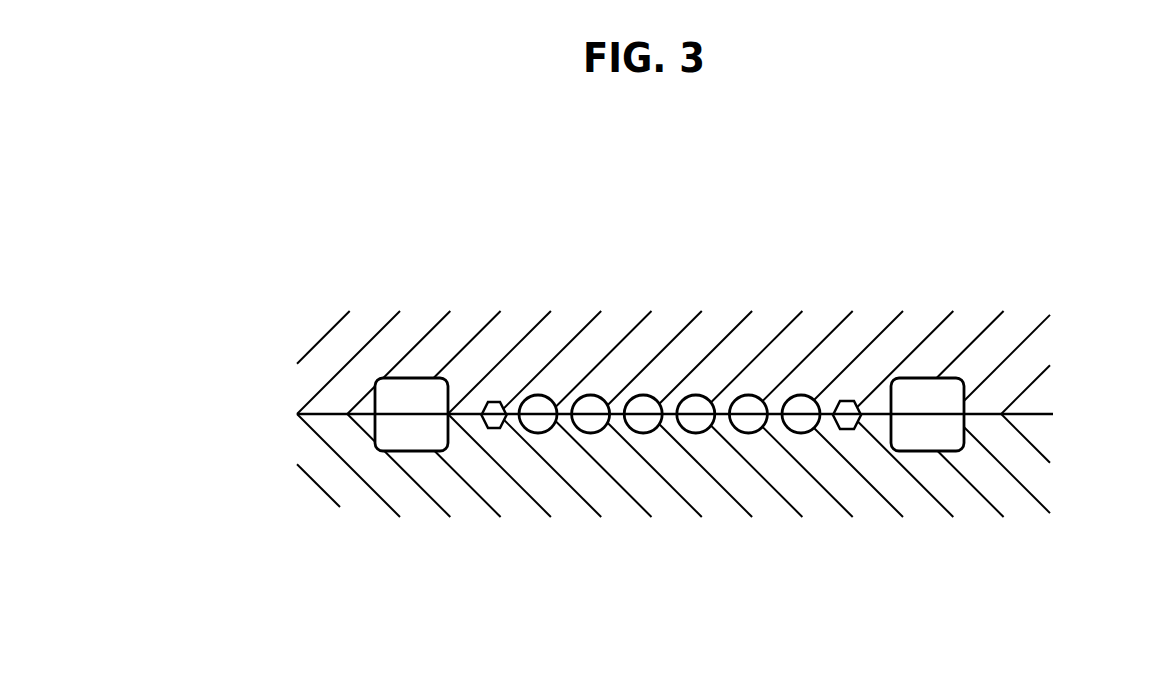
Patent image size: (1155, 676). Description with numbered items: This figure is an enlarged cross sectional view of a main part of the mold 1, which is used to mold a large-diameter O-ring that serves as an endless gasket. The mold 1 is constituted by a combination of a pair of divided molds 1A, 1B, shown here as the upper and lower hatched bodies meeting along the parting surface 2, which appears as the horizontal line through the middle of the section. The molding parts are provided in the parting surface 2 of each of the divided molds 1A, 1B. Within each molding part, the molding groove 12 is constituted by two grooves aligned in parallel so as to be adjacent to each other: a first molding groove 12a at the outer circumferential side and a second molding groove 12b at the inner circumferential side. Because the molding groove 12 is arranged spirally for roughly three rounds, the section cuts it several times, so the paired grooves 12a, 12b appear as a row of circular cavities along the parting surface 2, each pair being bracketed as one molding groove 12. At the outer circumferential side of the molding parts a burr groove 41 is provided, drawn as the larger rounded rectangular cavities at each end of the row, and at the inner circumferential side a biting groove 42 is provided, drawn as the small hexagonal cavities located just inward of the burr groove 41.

The mold 1 is at (175, 327).
The divided mold 1A is at (315, 453).
The divided mold 1B is at (315, 375).
The parting surface 2 is at (1037, 415).
The molding groove 12 is at (671, 397).
The first molding groove 12a is at (642, 405).
The second molding groove 12b is at (697, 407).
The burr groove 41 is at (412, 397).
The biting groove 42 is at (493, 400).